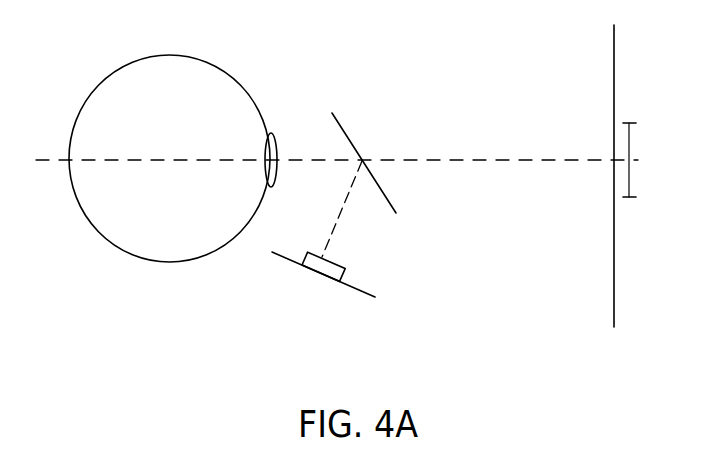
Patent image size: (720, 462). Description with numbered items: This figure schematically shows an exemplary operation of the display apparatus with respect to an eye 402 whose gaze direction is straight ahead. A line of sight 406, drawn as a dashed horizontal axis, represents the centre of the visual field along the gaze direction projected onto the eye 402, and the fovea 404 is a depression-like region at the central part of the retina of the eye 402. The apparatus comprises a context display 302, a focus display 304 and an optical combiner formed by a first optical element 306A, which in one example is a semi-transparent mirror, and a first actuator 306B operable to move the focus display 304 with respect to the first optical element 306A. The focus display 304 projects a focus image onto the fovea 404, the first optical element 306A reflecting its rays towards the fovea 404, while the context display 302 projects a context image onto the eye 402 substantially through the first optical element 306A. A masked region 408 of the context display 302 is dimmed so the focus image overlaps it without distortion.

The context display 302 is at (645, 166).
The focus display 304 is at (316, 295).
The first optical element 306A is at (371, 139).
The first actuator 306B is at (296, 287).
The eye 402 is at (177, 138).
The fovea 404 is at (152, 186).
The line of sight 406 is at (337, 130).
The masked region 408 is at (651, 186).